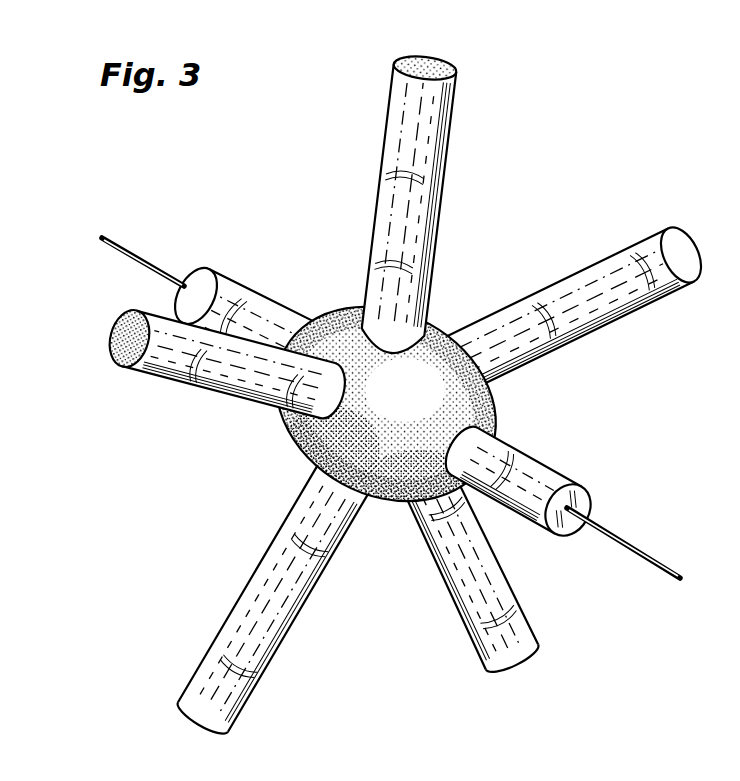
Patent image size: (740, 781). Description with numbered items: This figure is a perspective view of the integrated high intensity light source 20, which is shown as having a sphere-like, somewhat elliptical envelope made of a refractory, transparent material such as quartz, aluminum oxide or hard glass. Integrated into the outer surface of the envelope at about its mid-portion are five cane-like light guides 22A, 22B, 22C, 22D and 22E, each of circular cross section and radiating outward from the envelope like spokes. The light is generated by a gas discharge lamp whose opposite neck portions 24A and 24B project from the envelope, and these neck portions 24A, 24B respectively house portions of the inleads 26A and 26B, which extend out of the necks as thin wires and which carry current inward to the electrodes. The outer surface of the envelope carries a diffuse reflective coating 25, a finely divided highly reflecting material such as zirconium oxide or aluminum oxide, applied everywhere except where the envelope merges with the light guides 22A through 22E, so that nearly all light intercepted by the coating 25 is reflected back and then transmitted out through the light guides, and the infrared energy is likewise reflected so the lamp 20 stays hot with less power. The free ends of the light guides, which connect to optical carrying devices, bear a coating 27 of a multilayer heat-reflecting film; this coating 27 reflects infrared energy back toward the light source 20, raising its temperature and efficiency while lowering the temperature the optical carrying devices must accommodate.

The light source 20 is at (502, 235).
The light guide 22A is at (236, 600).
The light guide 22B is at (449, 600).
The light guide 22C is at (155, 377).
The light guide 22D is at (600, 258).
The light guide 22E is at (452, 157).
The neck portion 24A is at (233, 280).
The neck portion 24B is at (556, 470).
The diffuse reflective coating 25 is at (326, 311).
The inlead 26A is at (121, 244).
The inlead 26B is at (638, 548).
The coating 27 is at (440, 59).